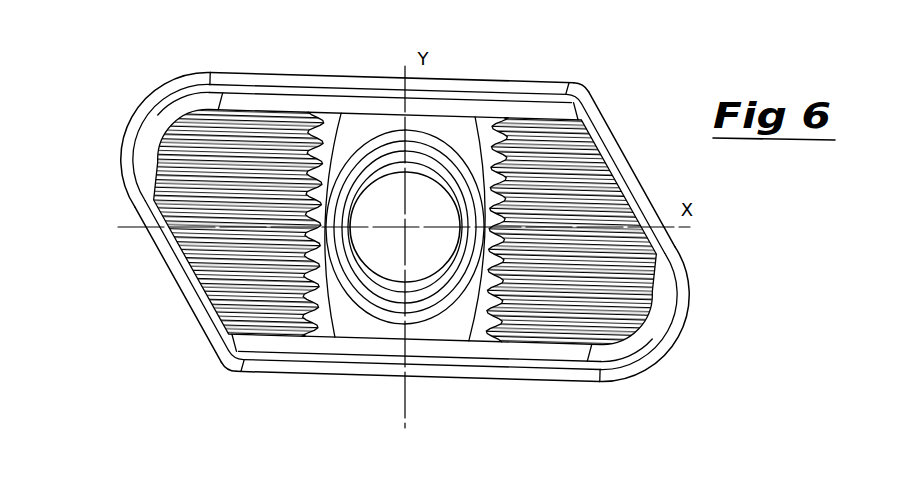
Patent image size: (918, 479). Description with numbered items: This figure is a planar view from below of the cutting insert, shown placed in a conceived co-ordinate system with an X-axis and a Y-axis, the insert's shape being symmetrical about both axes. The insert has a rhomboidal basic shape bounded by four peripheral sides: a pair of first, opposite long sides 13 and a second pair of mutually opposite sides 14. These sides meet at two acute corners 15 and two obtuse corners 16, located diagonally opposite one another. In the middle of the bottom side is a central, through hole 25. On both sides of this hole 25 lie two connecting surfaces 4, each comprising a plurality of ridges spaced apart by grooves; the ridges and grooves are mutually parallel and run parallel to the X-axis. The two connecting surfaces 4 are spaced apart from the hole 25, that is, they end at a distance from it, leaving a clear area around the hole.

The connecting surface 4 is at (277, 307).
The first peripheral side 13 is at (363, 66).
The second peripheral side 14 is at (660, 170).
The acute corner 15 is at (123, 100).
The obtuse corner 16 is at (605, 80).
The central through hole 25 is at (411, 268).